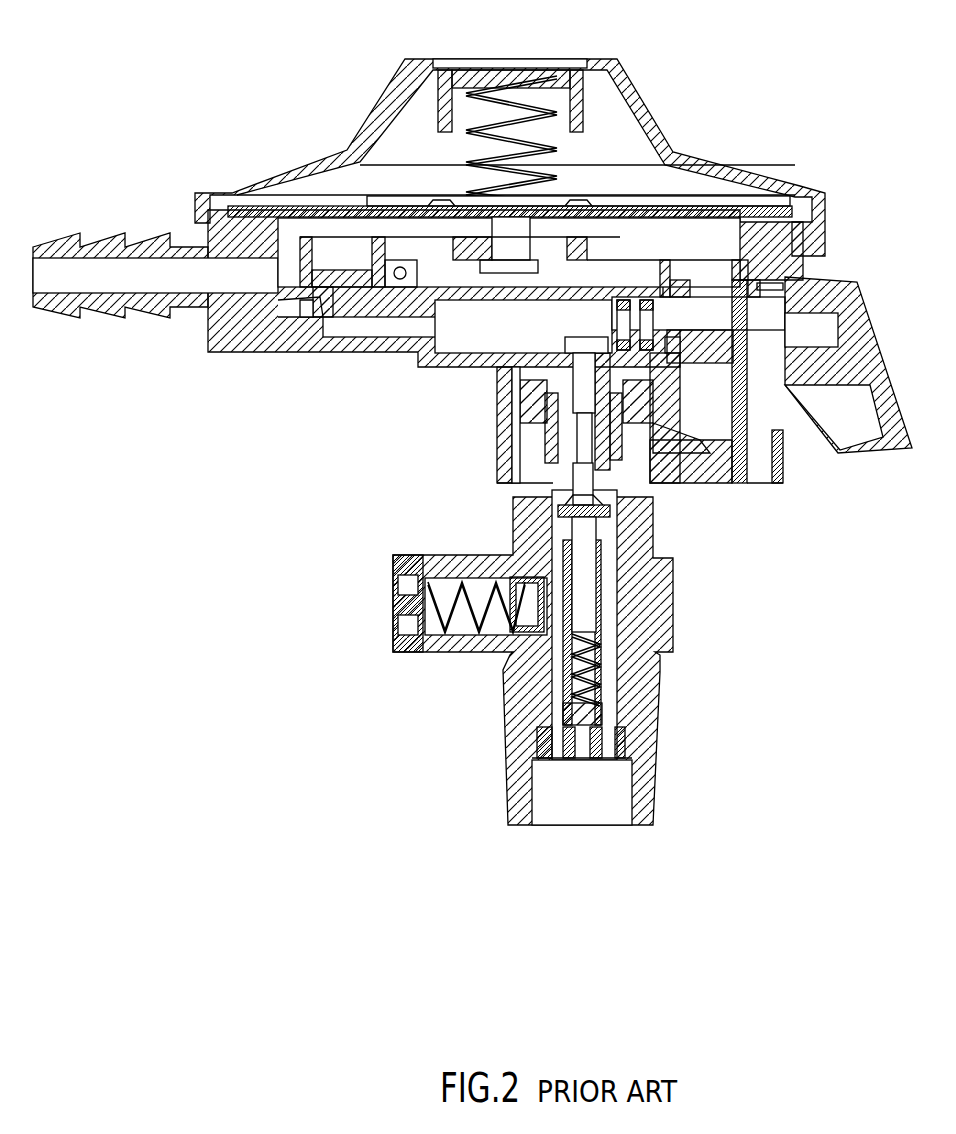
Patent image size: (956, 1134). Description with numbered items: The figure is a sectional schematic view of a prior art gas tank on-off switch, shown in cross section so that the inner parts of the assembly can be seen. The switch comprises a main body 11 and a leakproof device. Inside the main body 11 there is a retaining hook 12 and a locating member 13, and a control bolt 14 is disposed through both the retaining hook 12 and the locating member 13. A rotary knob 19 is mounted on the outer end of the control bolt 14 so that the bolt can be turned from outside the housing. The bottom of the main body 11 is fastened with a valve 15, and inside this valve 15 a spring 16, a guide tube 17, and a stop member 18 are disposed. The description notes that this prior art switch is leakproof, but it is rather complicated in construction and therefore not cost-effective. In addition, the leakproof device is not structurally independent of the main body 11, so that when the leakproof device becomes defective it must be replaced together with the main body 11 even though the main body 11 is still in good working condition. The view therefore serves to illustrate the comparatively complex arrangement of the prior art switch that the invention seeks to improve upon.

The main body 11 is at (706, 81).
The retaining hook 12 is at (738, 477).
The locating member 13 is at (702, 453).
The control bolt 14 is at (765, 320).
The valve 15 is at (665, 622).
The spring 16 is at (572, 683).
The guide tube 17 is at (577, 715).
The stop member 18 is at (577, 517).
The rotary knob 19 is at (866, 360).